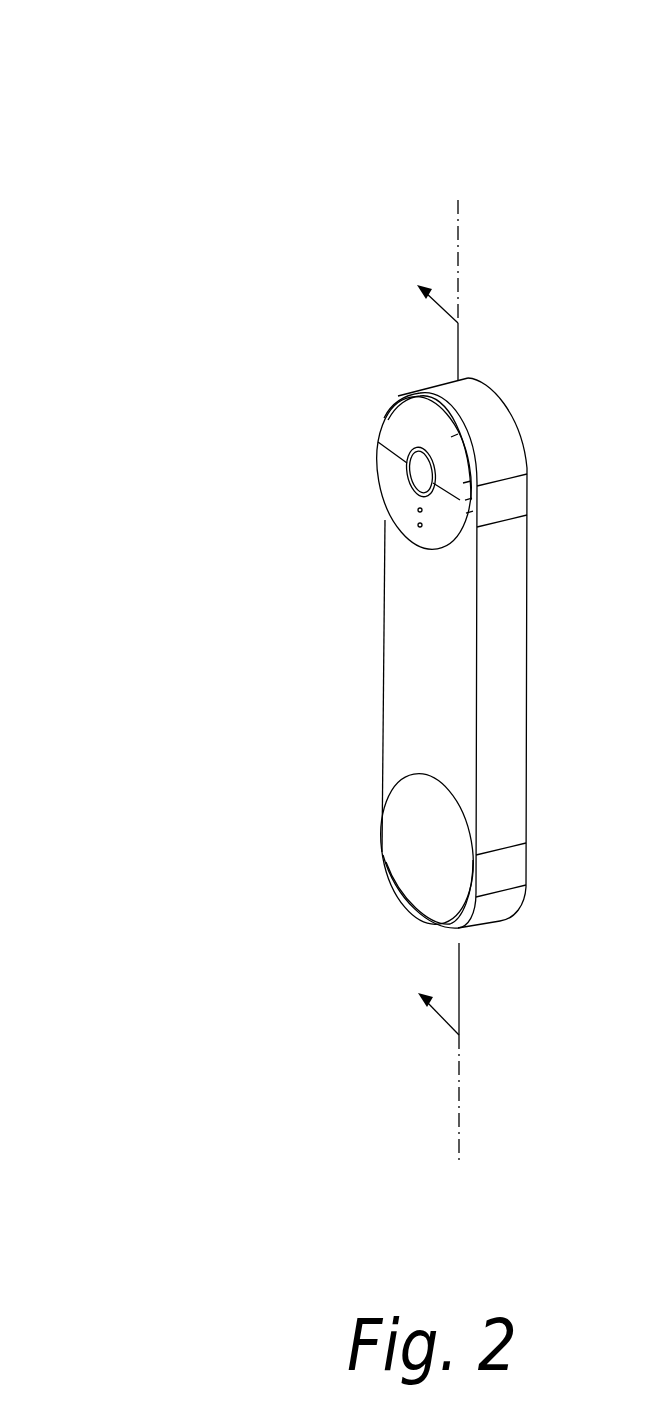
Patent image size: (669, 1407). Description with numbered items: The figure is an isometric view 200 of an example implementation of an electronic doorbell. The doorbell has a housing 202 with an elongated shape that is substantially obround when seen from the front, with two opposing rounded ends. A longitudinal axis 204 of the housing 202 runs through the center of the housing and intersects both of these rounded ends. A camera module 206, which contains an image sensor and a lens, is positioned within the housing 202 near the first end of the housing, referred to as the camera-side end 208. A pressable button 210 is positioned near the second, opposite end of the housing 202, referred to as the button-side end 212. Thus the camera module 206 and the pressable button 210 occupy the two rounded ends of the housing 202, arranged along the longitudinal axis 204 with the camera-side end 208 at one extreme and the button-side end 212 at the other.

The isometric view 200 is at (305, 585).
The housing 202 is at (385, 630).
The longitudinal axis 204 is at (458, 245).
The camera module 206 is at (404, 483).
The camera-side end 208 is at (510, 346).
The pressable button 210 is at (402, 776).
The button-side end 212 is at (510, 971).